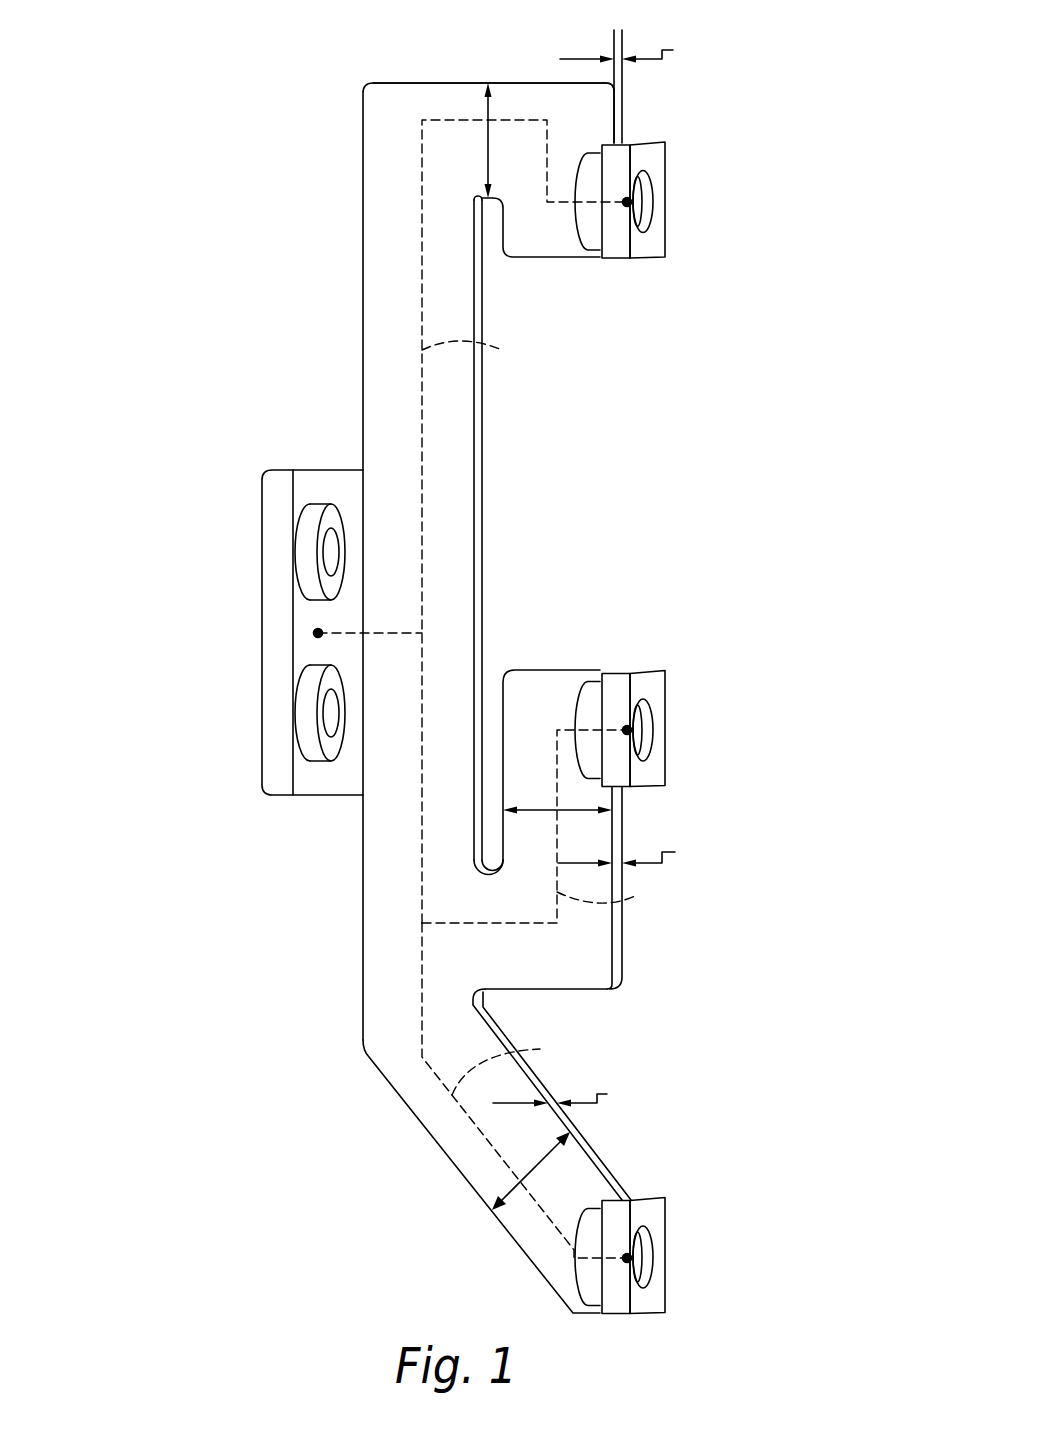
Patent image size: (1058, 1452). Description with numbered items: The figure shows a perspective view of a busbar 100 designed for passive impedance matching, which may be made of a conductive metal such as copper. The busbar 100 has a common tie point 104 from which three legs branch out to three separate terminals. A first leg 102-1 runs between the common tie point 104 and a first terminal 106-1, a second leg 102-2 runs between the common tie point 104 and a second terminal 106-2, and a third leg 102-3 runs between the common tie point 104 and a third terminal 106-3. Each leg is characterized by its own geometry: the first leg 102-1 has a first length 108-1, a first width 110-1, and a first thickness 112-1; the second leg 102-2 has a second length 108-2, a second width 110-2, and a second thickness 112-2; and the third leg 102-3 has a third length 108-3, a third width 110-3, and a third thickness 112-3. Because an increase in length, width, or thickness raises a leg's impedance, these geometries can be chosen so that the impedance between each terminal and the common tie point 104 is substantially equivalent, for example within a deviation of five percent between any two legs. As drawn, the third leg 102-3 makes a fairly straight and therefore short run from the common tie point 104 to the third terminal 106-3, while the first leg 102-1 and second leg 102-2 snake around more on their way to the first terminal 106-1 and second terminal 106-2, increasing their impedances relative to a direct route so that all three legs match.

The busbar 100 is at (143, 114).
The first leg 102-1 is at (430, 82).
The second leg 102-2 is at (625, 938).
The third leg 102-3 is at (468, 1182).
The common tie point 104 is at (262, 632).
The first terminal 106-1 is at (622, 260).
The second terminal 106-2 is at (650, 671).
The third terminal 106-3 is at (647, 1316).
The first length 108-1 is at (499, 353).
The second length 108-2 is at (632, 894).
The third length 108-3 is at (532, 1064).
The first width 110-1 is at (488, 141).
The second width 110-2 is at (570, 811).
The third width 110-3 is at (537, 1167).
The first thickness 112-1 is at (651, 46).
The second thickness 112-2 is at (650, 849).
The third thickness 112-3 is at (586, 1088).